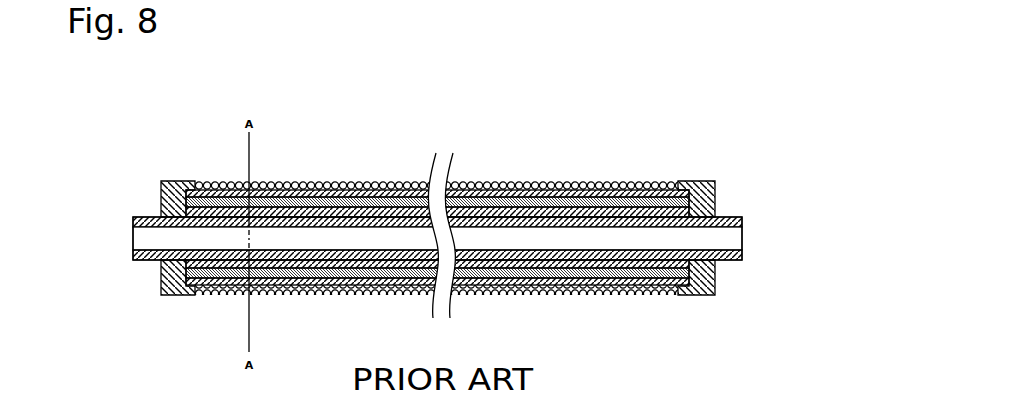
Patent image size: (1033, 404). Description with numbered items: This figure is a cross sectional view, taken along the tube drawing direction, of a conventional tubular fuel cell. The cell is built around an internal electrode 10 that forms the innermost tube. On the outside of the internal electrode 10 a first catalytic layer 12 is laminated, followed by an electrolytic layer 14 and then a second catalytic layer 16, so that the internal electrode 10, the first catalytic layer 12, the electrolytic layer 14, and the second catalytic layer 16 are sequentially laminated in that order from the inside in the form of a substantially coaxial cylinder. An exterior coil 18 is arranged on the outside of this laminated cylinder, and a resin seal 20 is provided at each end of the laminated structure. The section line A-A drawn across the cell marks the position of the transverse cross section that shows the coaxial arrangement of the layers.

The internal electrode 10 is at (415, 218).
The first catalytic layer 12 is at (393, 207).
The electrolytic layer 14 is at (346, 199).
The second catalytic layer 16 is at (298, 183).
The exterior coil 18 is at (487, 182).
The resin seal 20 is at (160, 191).